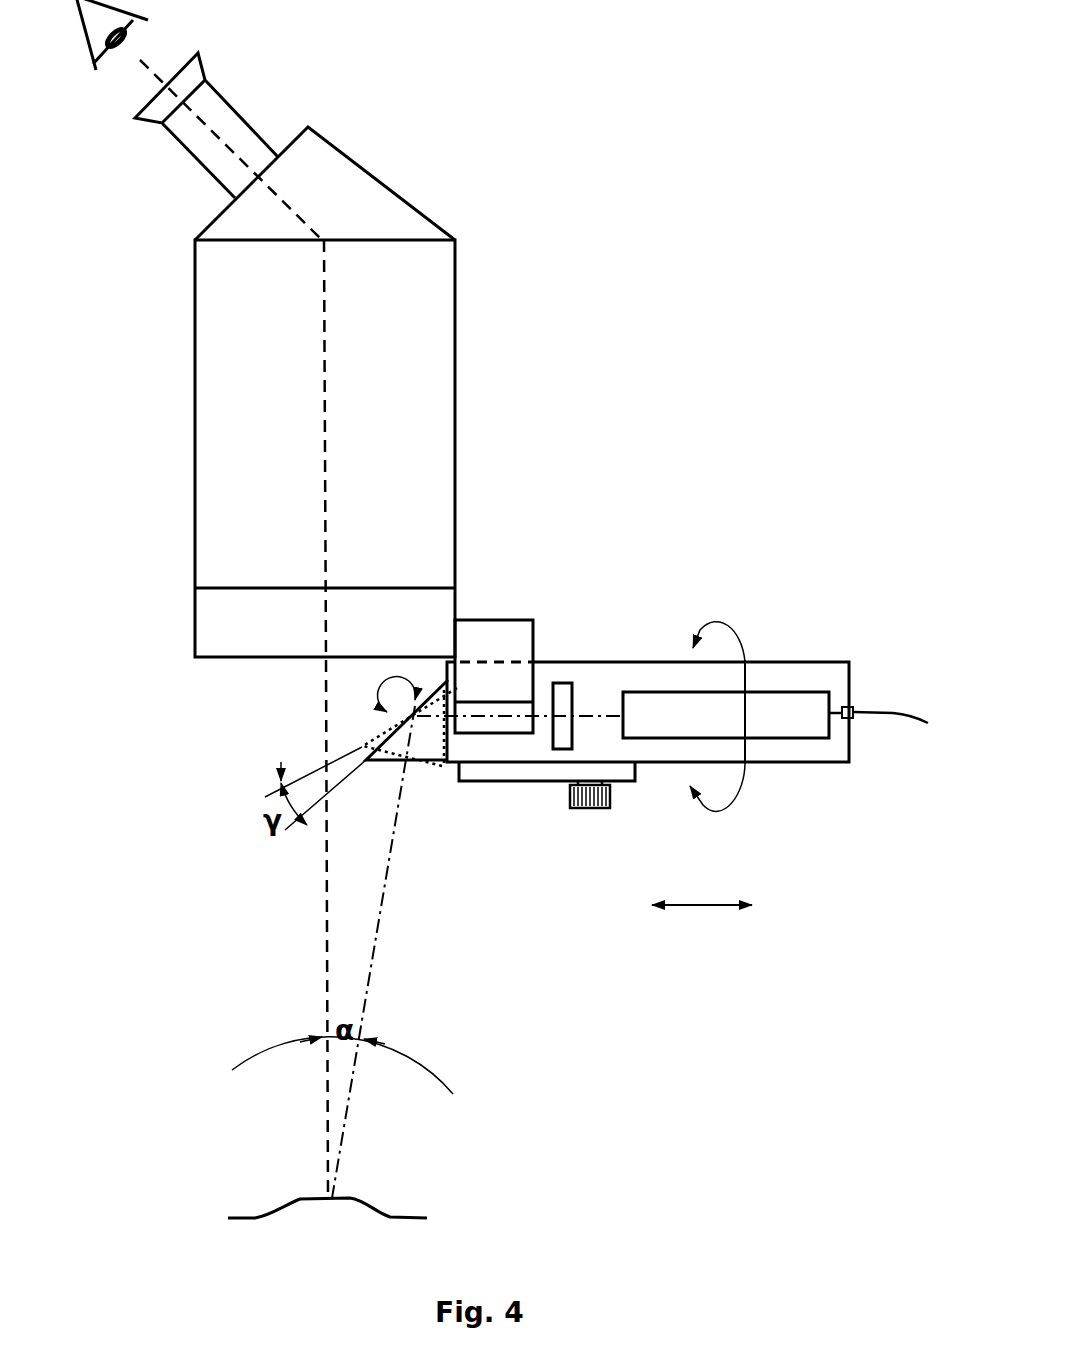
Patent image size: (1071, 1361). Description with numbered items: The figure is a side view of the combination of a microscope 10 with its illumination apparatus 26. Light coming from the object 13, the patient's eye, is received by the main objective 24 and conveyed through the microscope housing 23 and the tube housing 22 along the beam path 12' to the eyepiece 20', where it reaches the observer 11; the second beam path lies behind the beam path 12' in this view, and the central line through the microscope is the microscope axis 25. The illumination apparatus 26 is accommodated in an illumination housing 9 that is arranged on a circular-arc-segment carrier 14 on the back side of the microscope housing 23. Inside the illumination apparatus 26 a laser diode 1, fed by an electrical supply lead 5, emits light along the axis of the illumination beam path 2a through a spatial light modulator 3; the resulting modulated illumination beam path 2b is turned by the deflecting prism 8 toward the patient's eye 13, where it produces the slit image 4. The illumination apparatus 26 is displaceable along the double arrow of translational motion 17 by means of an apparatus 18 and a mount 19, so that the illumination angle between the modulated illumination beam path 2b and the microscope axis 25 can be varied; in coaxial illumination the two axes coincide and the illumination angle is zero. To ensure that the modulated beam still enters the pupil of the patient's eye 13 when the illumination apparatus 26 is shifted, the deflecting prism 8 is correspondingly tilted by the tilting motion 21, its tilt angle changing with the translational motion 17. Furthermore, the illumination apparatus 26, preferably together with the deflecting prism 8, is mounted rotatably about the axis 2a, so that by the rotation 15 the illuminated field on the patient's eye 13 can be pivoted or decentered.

The laser diode 1 is at (772, 715).
The axis of illumination beam path 2a is at (600, 710).
The axis of modulated illumination beam path 2b is at (482, 717).
The spatial light modulator 3 is at (558, 728).
The slit image 4 is at (337, 1195).
The electrical supply lead 5 is at (893, 714).
The deflecting prism 8 is at (383, 737).
The illumination housing 9 is at (745, 662).
The microscope 10 is at (148, 318).
The observer 11 is at (100, 60).
The beam path 12' is at (342, 360).
The object, patient's eye 13 is at (255, 1216).
The circular-arc-segment carrier 14 is at (505, 640).
The rotation about axis 2a 15 is at (712, 617).
The translational motion 17 is at (700, 907).
The apparatus 18 is at (618, 770).
The mount 19 is at (590, 808).
The eyepiece 20' is at (230, 107).
The tilting motion of deflecting prism 21 is at (383, 675).
The tube housing 22 is at (380, 178).
The microscope housing 23 is at (195, 520).
The main objective 24 is at (212, 630).
The microscope axis 25 is at (326, 890).
The illumination apparatus 26 is at (882, 612).